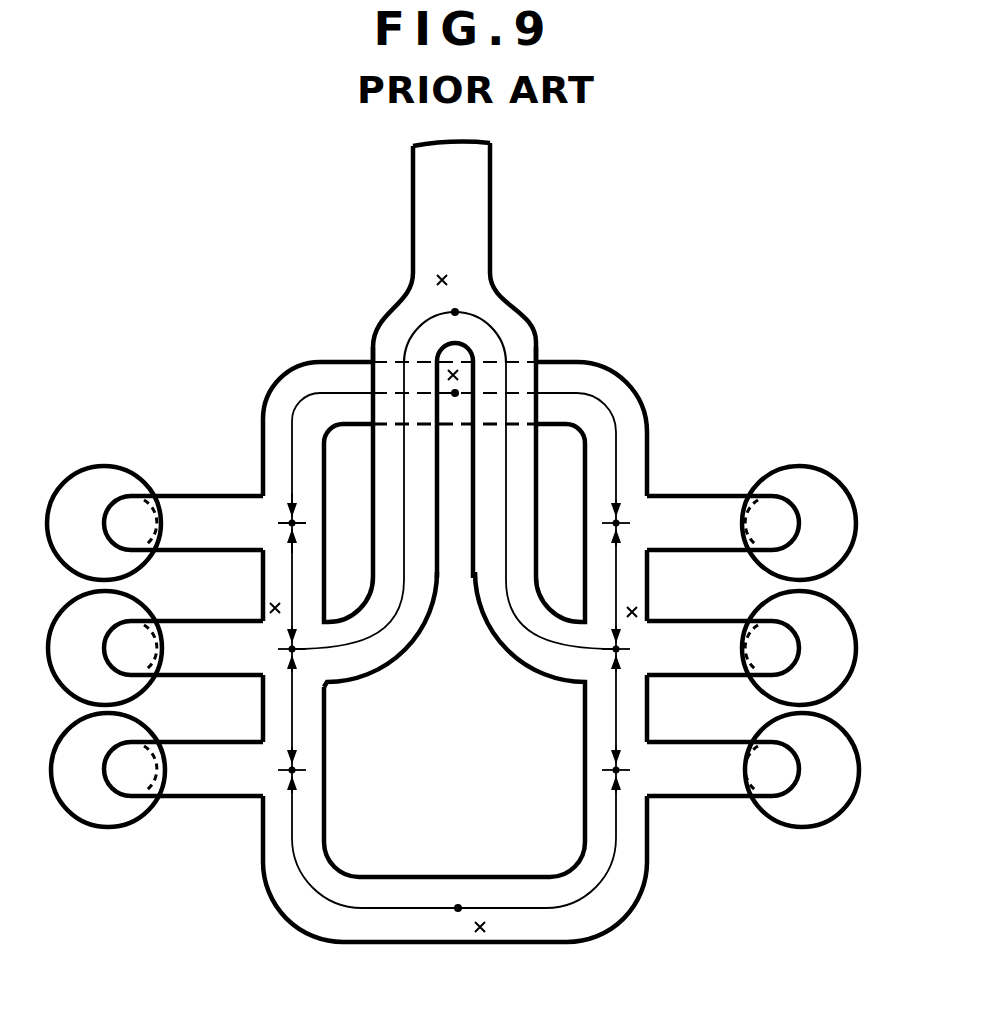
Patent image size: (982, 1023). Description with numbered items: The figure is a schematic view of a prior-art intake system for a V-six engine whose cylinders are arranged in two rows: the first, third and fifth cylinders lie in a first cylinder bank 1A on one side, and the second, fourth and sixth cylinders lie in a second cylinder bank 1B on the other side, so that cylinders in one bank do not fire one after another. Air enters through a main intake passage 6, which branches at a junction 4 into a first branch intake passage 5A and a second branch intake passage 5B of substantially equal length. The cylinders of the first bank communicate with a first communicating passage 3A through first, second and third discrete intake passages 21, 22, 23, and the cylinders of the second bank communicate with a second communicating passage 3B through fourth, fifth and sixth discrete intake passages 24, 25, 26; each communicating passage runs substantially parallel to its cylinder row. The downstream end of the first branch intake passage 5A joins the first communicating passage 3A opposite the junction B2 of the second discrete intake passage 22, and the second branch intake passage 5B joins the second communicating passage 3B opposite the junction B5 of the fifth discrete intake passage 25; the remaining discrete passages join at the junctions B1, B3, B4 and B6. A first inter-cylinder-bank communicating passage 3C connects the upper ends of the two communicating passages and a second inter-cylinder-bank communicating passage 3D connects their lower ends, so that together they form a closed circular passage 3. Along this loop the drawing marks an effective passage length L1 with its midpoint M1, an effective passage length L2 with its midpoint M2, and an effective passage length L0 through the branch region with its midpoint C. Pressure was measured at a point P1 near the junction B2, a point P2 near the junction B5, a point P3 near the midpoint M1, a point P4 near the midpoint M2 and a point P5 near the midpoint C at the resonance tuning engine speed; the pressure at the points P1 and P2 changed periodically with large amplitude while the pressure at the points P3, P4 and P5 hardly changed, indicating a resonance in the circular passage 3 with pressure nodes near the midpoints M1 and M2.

The main intake passage 6 is at (497, 202).
The junction 4 is at (500, 306).
The midpoint of effective passage length Lo C is at (457, 310).
The effective passage length Lo L0 is at (500, 342).
The point P5 is at (436, 279).
The point P3 is at (445, 377).
The midpoint of effective passage length L1 M1 is at (455, 397).
The first inter-cylinder-bank communicating passage 3C is at (586, 362).
The effective passage length L1 is at (611, 440).
The first communicating passage 3A is at (316, 738).
The second communicating passage 3B is at (584, 740).
The second inter-cylinder-bank communicating passage 3D is at (574, 925).
The effective passage length L2 is at (616, 863).
The circular passage 3 is at (381, 952).
The first branch intake passage 5A is at (417, 618).
The second branch intake passage 5B is at (514, 637).
The third discrete intake passage 23 is at (188, 538).
The second discrete intake passage 22 is at (208, 660).
The first discrete intake passage 21 is at (208, 783).
The sixth discrete intake passage 26 is at (724, 537).
The fifth discrete intake passage 25 is at (710, 660).
The fourth discrete intake passage 24 is at (715, 783).
The first cylinder bank 1A is at (110, 610).
The second cylinder bank 1B is at (800, 597).
The junction B1 is at (296, 773).
The junction B2 is at (296, 653).
The junction B3 is at (296, 522).
The junction B4 is at (612, 773).
The junction B5 is at (612, 652).
The junction B6 is at (611, 523).
The point P1 is at (275, 602).
The point P2 is at (633, 608).
The point P4 is at (479, 935).
The midpoint of effective passage length L2 M2 is at (458, 904).